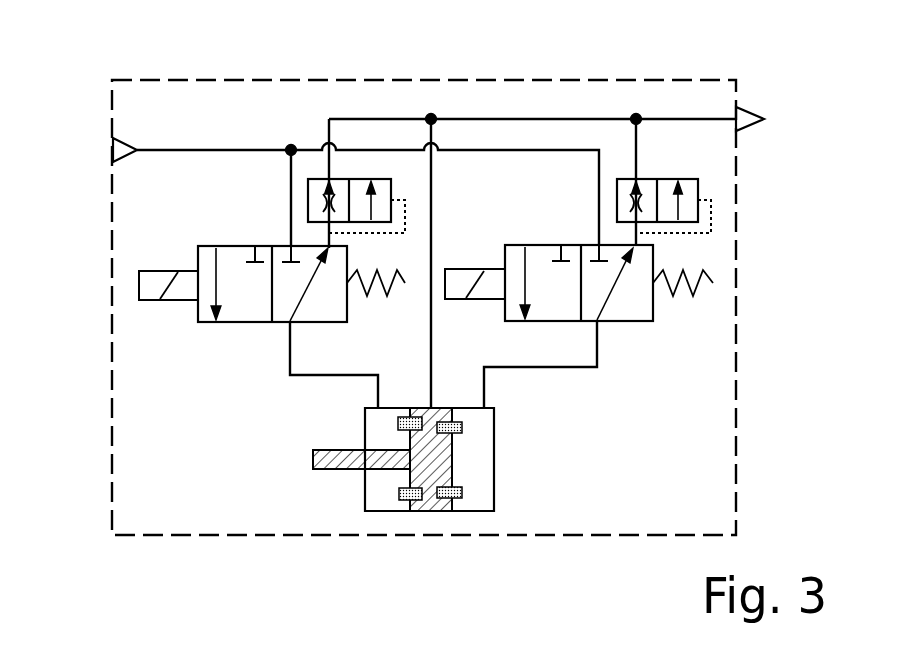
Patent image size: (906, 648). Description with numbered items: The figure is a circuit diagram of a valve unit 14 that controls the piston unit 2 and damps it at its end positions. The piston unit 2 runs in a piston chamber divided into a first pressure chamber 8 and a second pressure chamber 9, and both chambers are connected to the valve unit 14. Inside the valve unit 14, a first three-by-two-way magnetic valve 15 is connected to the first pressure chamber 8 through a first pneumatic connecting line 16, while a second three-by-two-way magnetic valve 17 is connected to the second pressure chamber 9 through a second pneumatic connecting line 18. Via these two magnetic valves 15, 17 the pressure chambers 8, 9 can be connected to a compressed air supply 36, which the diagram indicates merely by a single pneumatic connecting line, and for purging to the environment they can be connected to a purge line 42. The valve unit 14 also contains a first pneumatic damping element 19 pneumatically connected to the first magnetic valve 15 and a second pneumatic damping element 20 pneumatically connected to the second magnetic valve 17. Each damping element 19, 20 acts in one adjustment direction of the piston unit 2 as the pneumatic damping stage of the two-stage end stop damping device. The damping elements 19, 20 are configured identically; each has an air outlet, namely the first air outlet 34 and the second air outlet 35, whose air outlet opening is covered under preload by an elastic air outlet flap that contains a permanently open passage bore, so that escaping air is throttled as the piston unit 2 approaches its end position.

The piston unit 2 is at (427, 524).
The first pressure chamber 8 is at (376, 492).
The second pressure chamber 9 is at (487, 492).
The valve unit 14 is at (112, 117).
The first 3/2-way magnetic valve 15 is at (237, 322).
The first pneumatic connecting line 16 is at (310, 375).
The second 3/2-way magnetic valve 17 is at (628, 321).
The second pneumatic connecting line 18 is at (572, 367).
The first pneumatic damping element 19 is at (361, 179).
The second pneumatic damping element 20 is at (664, 179).
The first air outlet 34 is at (320, 179).
The second air outlet 35 is at (635, 179).
The compressed air supply 36 is at (185, 152).
The purge line 42 is at (507, 119).